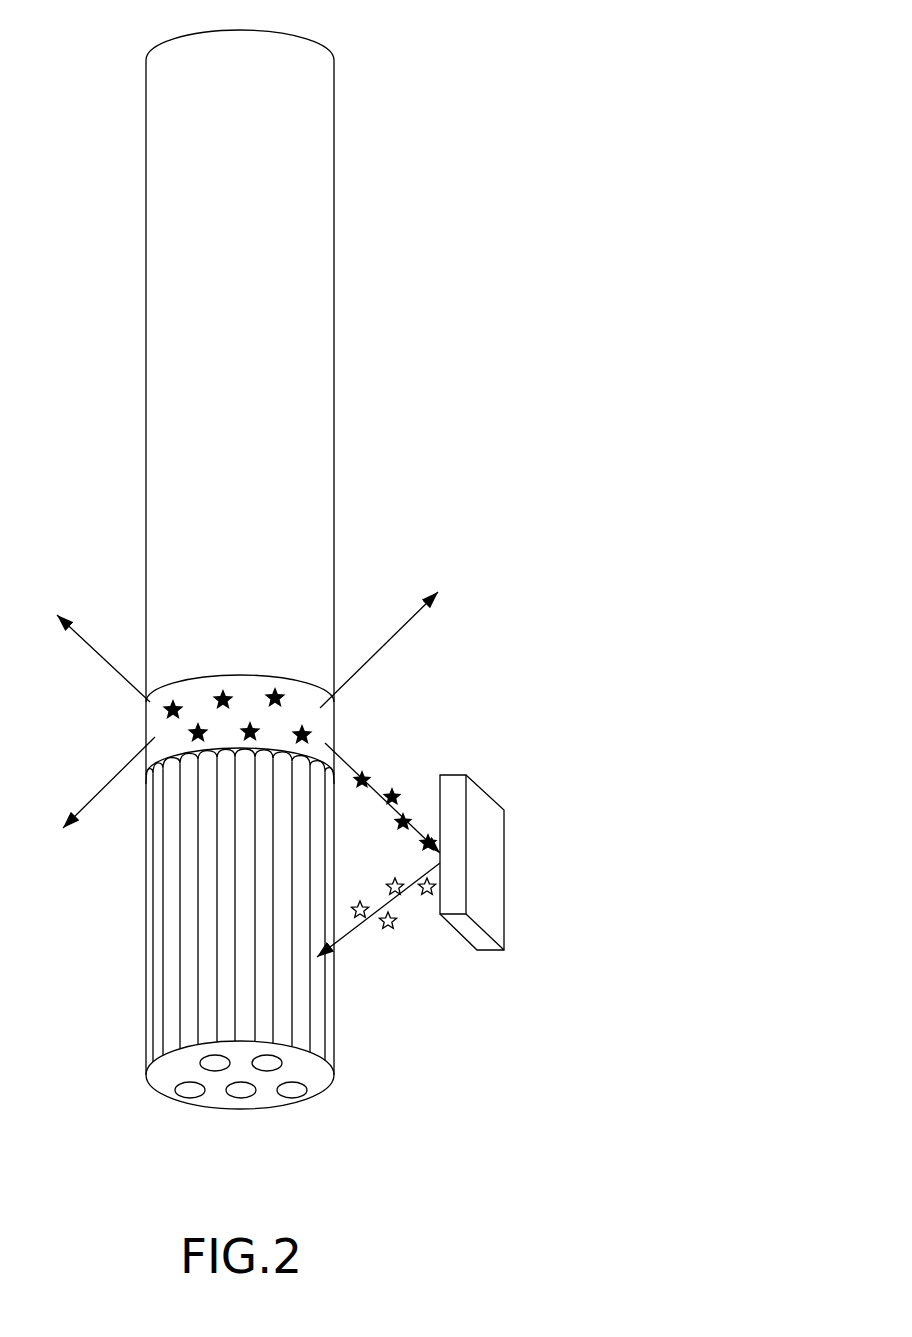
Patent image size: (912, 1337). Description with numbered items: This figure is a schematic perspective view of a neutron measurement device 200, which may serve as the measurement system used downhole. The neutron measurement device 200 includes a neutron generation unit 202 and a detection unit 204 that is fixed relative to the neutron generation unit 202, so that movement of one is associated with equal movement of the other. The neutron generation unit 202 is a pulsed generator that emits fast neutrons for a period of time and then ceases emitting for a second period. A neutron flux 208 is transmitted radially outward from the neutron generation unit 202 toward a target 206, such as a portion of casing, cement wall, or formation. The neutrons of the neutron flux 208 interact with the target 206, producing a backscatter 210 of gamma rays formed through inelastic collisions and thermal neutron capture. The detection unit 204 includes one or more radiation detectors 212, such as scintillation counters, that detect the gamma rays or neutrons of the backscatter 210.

The neutron measurement device 200 is at (428, 107).
The neutron generation unit 202 is at (250, 687).
The detection unit 204 is at (192, 1100).
The target 206 is at (504, 810).
The neutron flux 208 is at (390, 785).
The backscatter 210 is at (388, 930).
The radiation detectors 212 is at (290, 1098).